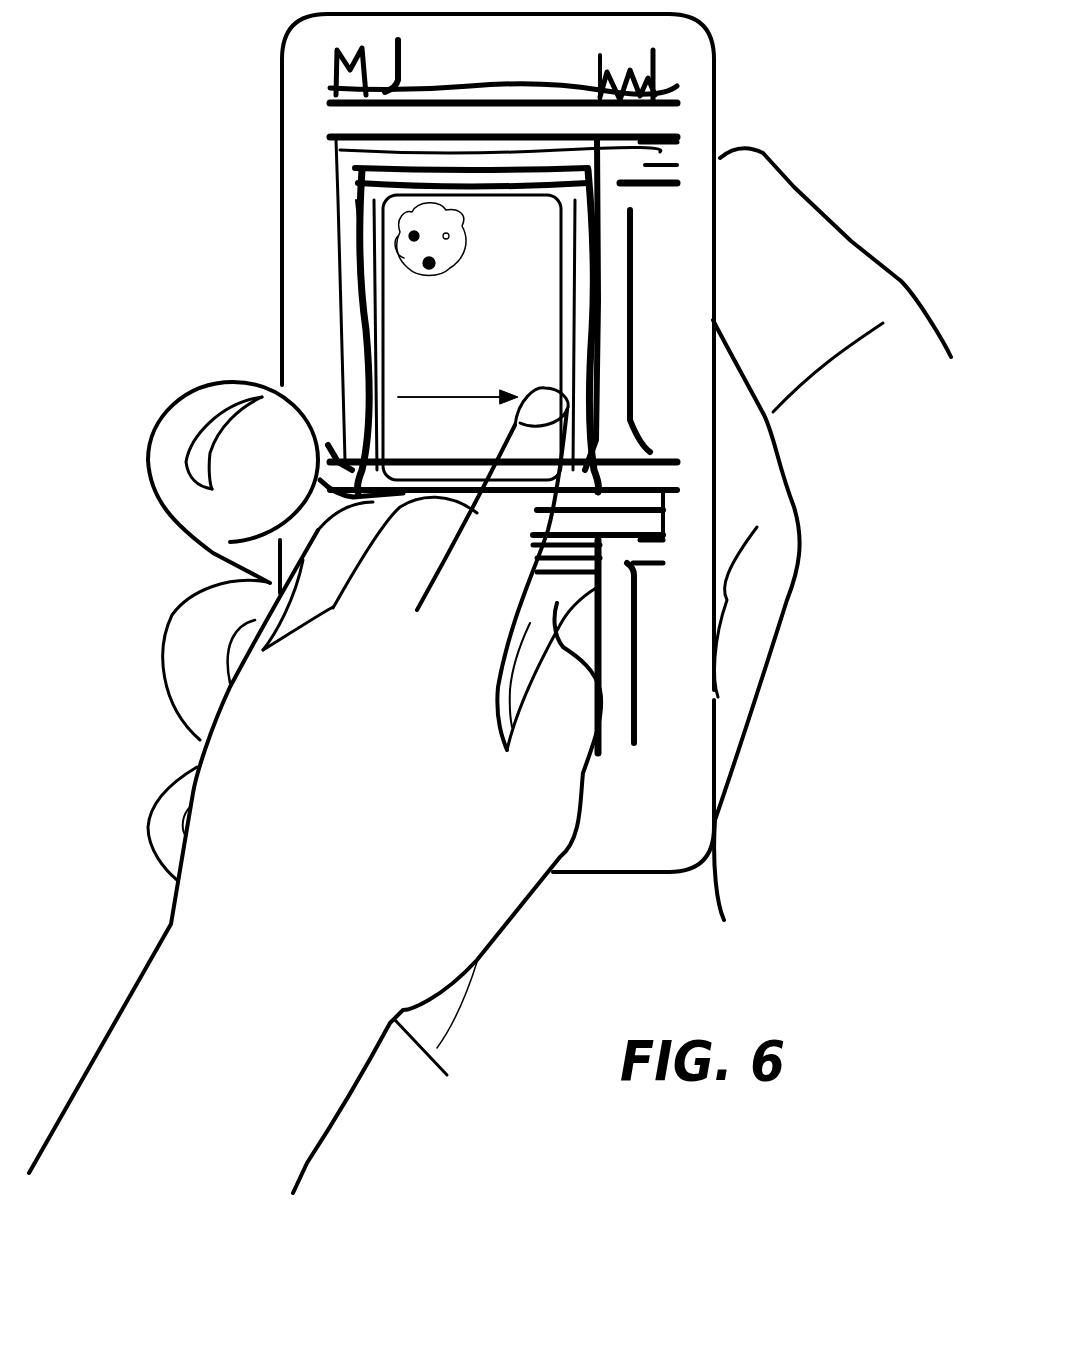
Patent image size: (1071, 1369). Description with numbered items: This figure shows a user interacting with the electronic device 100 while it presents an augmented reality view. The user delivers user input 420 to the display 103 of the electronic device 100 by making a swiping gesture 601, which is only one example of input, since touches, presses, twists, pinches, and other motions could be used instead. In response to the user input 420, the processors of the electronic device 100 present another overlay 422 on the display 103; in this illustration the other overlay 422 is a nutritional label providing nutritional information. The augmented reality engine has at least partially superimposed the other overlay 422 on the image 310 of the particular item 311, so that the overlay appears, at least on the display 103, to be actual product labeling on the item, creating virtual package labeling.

The electronic device 100 is at (275, 294).
The display 103 is at (680, 230).
The image 310 is at (686, 110).
The particular item 311 is at (390, 197).
The user input 420 is at (534, 413).
The other overlay 422 is at (392, 272).
The swiping gesture 601 is at (441, 397).